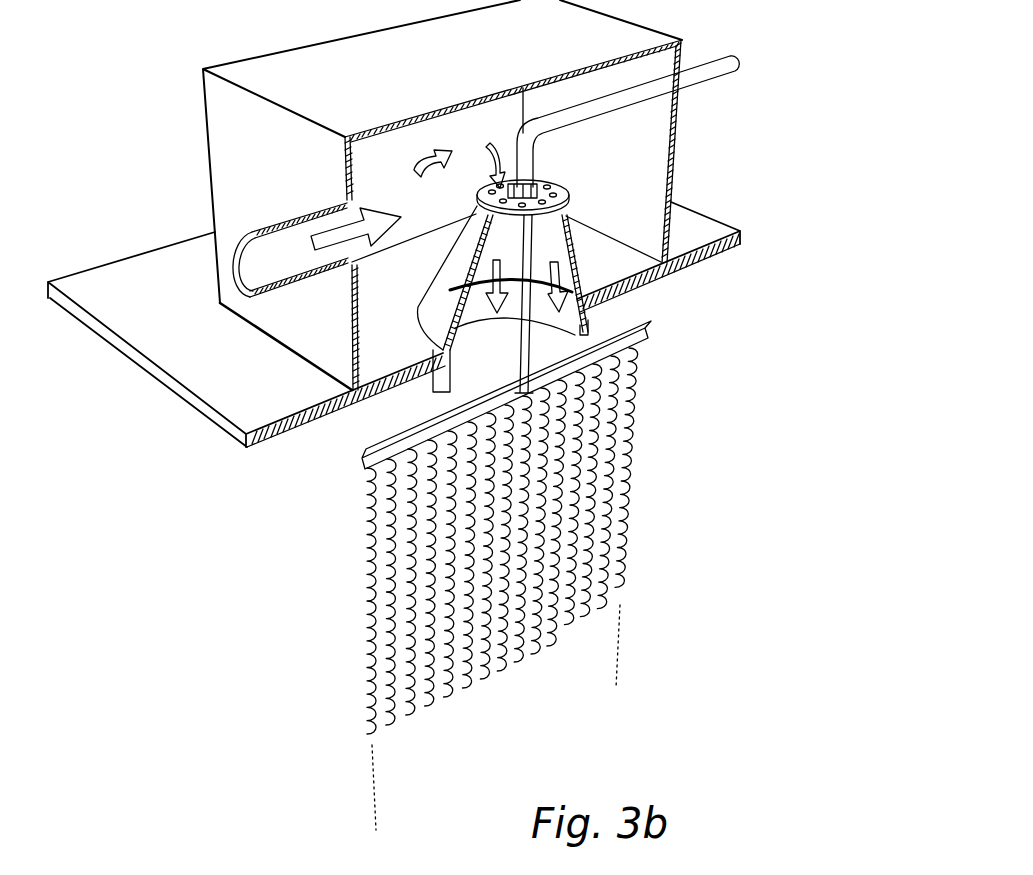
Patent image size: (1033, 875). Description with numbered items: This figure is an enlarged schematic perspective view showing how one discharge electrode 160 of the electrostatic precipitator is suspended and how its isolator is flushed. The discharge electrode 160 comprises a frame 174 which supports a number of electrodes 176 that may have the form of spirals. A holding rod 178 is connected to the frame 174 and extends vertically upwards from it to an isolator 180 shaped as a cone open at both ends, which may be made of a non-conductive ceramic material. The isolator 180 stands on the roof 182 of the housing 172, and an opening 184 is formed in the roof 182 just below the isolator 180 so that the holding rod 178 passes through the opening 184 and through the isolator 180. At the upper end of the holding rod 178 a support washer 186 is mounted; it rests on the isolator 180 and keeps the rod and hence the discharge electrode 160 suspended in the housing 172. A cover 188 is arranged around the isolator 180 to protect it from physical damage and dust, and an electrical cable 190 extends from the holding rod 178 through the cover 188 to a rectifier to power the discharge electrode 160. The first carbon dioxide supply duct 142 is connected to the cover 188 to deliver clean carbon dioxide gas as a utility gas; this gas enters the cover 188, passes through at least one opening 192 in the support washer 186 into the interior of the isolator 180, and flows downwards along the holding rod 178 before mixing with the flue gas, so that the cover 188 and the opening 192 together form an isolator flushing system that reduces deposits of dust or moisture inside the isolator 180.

The cover 188 is at (233, 125).
The first carbon dioxide supply duct 142 is at (285, 222).
The opening 192 is at (477, 197).
The support washer 186 is at (568, 193).
The electrical cable 190 is at (700, 78).
The isolator 180 is at (463, 265).
The roof 182 is at (393, 367).
The holding rod 178 is at (583, 327).
The opening 184 is at (503, 368).
The frame 174 is at (643, 340).
The housing 172 is at (254, 393).
The discharge electrode 160 is at (435, 589).
The electrodes 176 is at (367, 632).